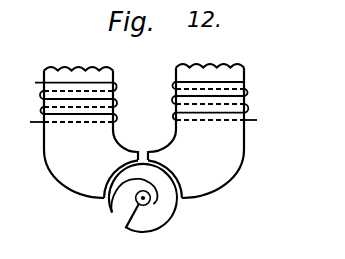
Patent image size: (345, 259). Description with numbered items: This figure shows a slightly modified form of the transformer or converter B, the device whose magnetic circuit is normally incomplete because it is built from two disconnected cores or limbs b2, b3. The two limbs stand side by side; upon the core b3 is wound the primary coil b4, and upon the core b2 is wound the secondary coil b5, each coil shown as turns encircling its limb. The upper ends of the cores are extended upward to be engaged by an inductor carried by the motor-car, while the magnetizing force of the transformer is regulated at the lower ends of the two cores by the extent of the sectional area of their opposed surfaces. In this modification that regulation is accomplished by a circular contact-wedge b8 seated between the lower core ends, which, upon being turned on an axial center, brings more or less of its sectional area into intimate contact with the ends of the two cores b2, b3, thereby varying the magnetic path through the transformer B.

The transformer or converter B is at (143, 147).
The core or limb b2 is at (91, 132).
The core or limb b3 is at (196, 131).
The primary coil b4 is at (244, 81).
The secondary coil b5 is at (113, 79).
The circular contact-wedge b8 is at (156, 198).